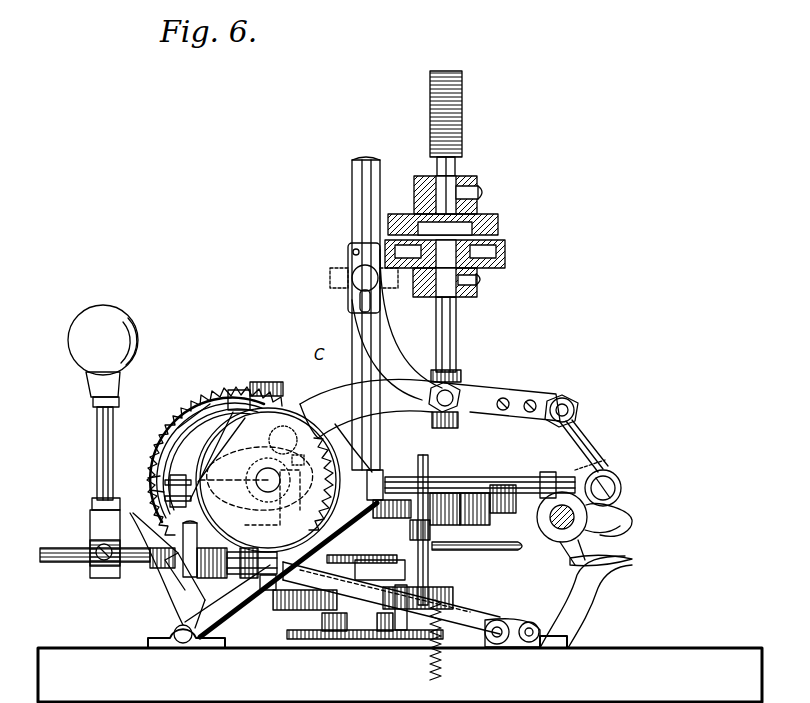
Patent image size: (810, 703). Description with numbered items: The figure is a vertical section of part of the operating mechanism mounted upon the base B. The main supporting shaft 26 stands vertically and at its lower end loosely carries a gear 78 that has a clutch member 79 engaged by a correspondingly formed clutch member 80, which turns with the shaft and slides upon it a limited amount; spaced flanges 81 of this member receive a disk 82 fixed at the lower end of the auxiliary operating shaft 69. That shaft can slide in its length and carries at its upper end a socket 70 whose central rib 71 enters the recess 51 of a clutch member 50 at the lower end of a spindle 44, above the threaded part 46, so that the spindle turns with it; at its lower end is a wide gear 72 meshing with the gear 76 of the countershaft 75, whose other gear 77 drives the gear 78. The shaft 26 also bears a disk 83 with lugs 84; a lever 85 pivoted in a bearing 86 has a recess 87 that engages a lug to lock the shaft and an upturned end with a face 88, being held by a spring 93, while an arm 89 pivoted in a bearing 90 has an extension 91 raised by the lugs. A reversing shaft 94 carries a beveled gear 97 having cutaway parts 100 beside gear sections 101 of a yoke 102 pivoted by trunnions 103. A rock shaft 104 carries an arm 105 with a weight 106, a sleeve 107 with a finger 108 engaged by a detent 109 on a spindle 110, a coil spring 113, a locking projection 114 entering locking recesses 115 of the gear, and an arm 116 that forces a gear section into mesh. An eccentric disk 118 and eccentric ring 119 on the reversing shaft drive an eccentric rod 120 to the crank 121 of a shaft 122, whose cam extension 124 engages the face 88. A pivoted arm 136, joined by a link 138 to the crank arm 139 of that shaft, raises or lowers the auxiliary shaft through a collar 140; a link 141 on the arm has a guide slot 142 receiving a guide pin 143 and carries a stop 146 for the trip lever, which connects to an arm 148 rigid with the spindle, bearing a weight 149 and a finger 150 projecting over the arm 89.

The base B is at (400, 675).
The main supporting shaft 26 is at (378, 165).
The spindle 44 is at (455, 166).
The threaded part 46 is at (462, 110).
The clutch member 50 is at (478, 184).
The recess 51 is at (498, 220).
The auxiliary operating shaft 69 is at (456, 346).
The socket 70 is at (425, 297).
The rib 71 is at (480, 250).
The gear 72 is at (505, 485).
The countershaft 75 is at (448, 493).
The gear 76 is at (472, 493).
The gear 77 is at (470, 610).
The gear 78 is at (290, 610).
The clutch member 79 is at (420, 600).
The clutch member 80 is at (360, 639).
The flange 81 is at (418, 470).
The disk 82 is at (515, 552).
The disk 83 is at (330, 631).
The lug 84 is at (383, 631).
The lever 85 is at (572, 618).
The bearing 86 is at (545, 648).
The recess 87 is at (395, 609).
The face 88 is at (625, 556).
The arm 89 is at (492, 644).
The bearing 90 is at (529, 642).
The extension 91 is at (384, 595).
The spring 93 is at (442, 650).
The reversing shaft 94 is at (236, 478).
The beveled gear 97 is at (178, 428).
The cutaway part 100 is at (148, 478).
The gear section 101 is at (150, 490).
The yoke 102 is at (180, 475).
The trunnion 103 is at (272, 514).
The rock shaft 104 is at (75, 562).
The arm 105 is at (97, 460).
The weight 106 is at (128, 318).
The sleeve 107 is at (212, 578).
The finger 108 is at (228, 520).
The detent 109 is at (166, 590).
The spindle 110 is at (180, 640).
The coil spring 113 is at (152, 568).
The locking projection 114 is at (232, 598).
The locking recess 115 is at (262, 382).
The arm 116 is at (288, 445).
The eccentric disk 118 is at (237, 390).
The eccentric ring 119 is at (200, 410).
The eccentric rod 120 is at (548, 470).
The crank 121 is at (620, 520).
The shaft 122 is at (612, 472).
The cam extension 124 is at (580, 552).
The pivoted arm 136 is at (486, 390).
The link 138 is at (590, 450).
The crank arm 139 is at (622, 526).
The collar 140 is at (470, 426).
The link 141 is at (395, 350).
The guide slot 142 is at (360, 305).
The guide pin 143 is at (352, 278).
The stop 146 is at (348, 250).
The arm 148 is at (218, 616).
The weight 149 is at (378, 470).
The finger 150 is at (268, 590).